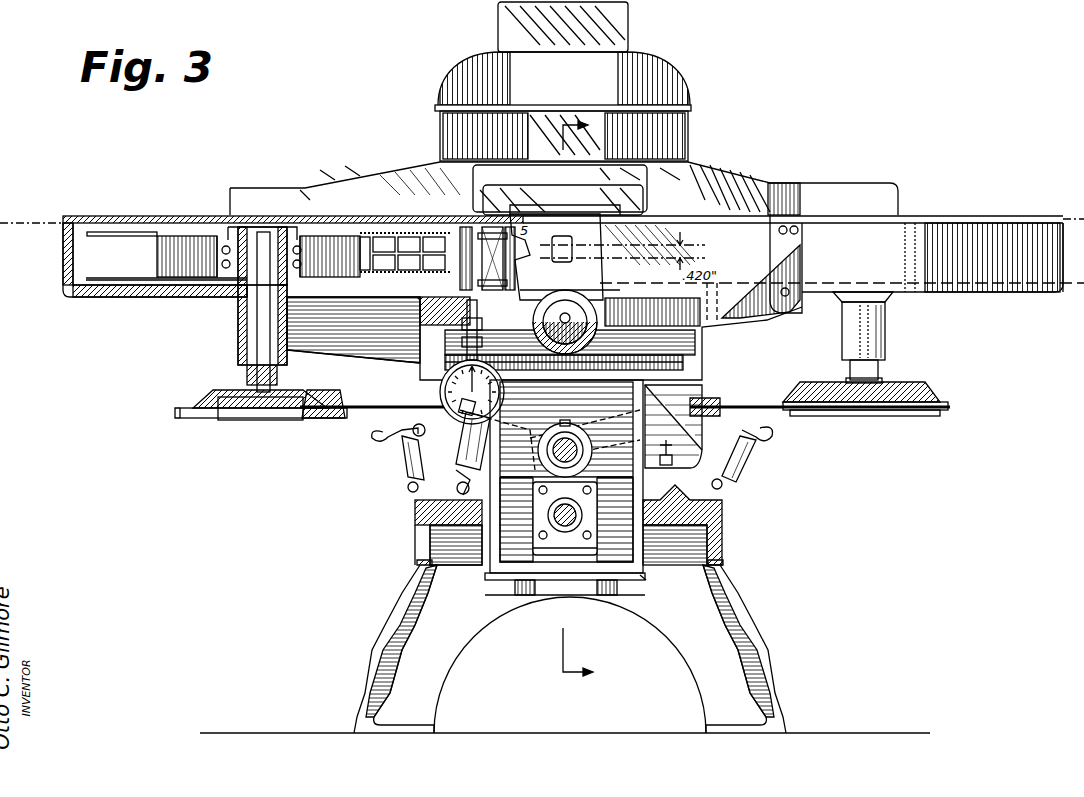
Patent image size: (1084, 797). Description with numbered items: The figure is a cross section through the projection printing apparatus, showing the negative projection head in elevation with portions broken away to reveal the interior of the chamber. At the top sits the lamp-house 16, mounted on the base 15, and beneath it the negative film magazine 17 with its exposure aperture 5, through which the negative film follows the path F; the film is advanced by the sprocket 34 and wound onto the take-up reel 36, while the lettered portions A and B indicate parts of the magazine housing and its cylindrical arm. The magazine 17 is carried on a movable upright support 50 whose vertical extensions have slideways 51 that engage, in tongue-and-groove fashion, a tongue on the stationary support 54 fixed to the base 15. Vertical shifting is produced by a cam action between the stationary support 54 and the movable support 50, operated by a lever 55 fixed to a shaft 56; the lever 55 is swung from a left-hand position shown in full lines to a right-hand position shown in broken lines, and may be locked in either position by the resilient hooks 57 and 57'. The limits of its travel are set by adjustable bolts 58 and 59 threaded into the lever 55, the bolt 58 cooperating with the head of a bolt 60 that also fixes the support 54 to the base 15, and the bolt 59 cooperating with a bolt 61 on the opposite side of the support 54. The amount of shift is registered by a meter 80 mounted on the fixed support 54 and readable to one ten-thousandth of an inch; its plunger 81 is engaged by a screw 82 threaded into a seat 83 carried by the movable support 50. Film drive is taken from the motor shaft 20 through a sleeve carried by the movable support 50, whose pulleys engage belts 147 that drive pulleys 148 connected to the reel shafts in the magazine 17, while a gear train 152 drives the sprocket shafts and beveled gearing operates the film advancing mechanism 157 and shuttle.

The lamp-house 16 is at (690, 142).
The negative film magazine 17 is at (1025, 212).
The stator housing A is at (147, 214).
The cylindrical arm B is at (958, 222).
The film path F is at (415, 232).
The take-up reel 36 is at (95, 230).
The sprocket 34 is at (465, 232).
The exposure aperture 5 is at (592, 402).
The pulleys 148 is at (185, 405).
The belts 147 is at (335, 405).
The film advancing mechanism 157 is at (605, 318).
The movable upright support 50 is at (702, 340).
The gear train 152 is at (685, 362).
The meter 80 is at (442, 388).
The plunger 81 is at (470, 352).
The screw 82 is at (470, 337).
The seat 83 is at (470, 322).
The bolt 59 is at (458, 400).
The bolt 58 is at (445, 482).
The resilient hook 57 is at (385, 438).
The resilient hook 57' is at (753, 458).
The lever 55 is at (412, 450).
The bolt 61 is at (690, 465).
The shaft 56 is at (570, 440).
The shaft 20 is at (590, 520).
The slideways 51 is at (600, 582).
The stationary support 54 is at (645, 580).
The bolt 60 is at (432, 512).
The base 15 is at (722, 515).